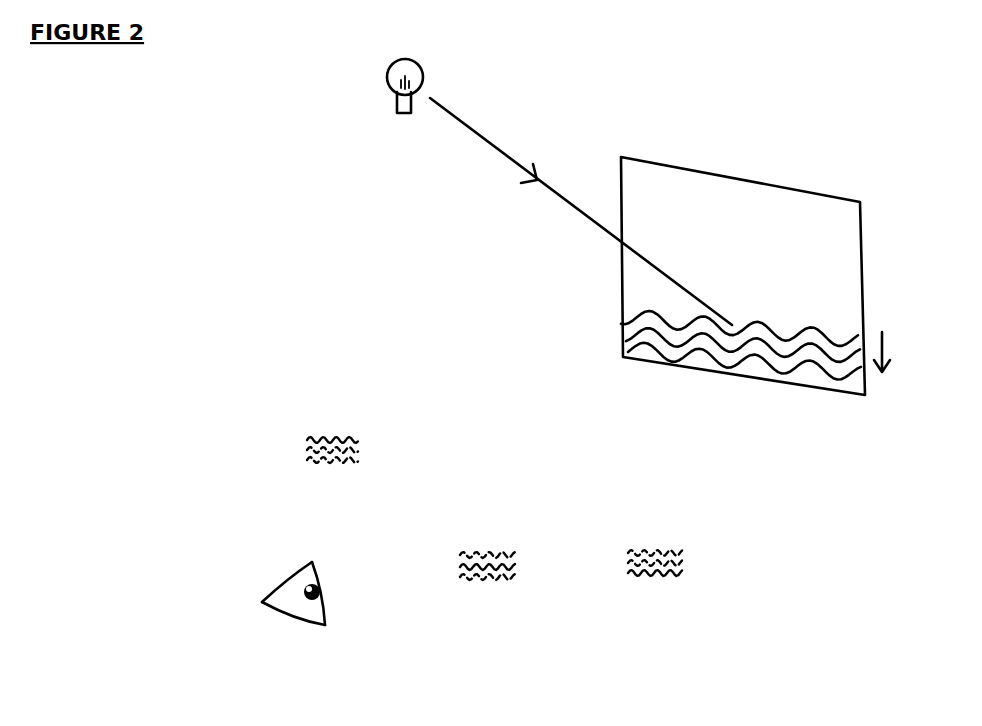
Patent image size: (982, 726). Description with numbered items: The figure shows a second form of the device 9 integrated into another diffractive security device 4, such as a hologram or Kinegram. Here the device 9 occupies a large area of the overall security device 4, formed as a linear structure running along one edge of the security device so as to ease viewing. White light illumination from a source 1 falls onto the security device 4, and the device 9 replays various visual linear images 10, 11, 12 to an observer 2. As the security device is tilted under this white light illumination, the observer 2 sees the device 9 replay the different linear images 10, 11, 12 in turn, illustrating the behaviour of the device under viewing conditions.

The source 1 is at (544, 192).
The observer 2 is at (293, 613).
The diffractive security device 4 is at (759, 276).
The device 9 is at (741, 339).
The visual linear image 10 is at (650, 304).
The visual linear image 11 is at (703, 323).
The visual linear image 12 is at (757, 350).